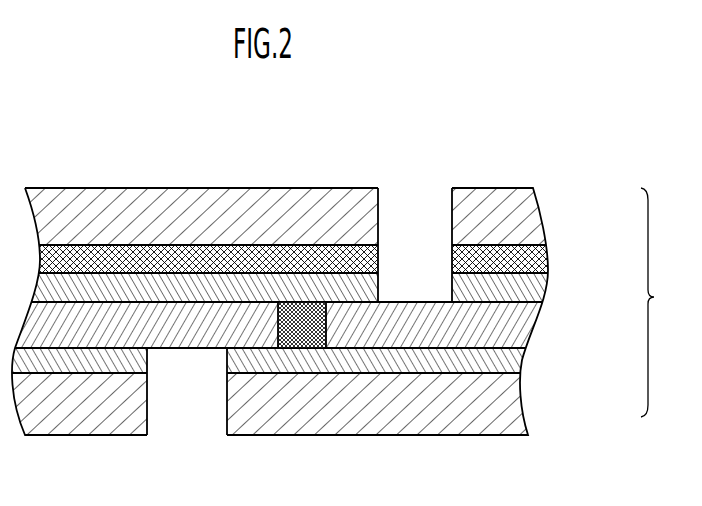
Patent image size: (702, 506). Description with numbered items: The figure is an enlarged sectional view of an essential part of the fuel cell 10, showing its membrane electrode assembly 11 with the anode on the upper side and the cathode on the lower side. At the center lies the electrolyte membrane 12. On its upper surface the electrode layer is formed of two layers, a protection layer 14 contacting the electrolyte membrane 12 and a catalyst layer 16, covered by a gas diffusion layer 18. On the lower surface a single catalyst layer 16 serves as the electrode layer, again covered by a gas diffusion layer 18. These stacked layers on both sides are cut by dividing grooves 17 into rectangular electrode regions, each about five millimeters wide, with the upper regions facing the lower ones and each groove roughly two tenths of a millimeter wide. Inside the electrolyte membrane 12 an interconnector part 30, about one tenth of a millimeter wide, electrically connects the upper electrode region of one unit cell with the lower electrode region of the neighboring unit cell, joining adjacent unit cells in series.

The fuel cell 10 is at (499, 135).
The membrane electrode assembly 11 is at (658, 302).
The electrolyte membrane 12 is at (525, 332).
The protection layer 14 is at (548, 293).
The catalyst layer 16 is at (548, 260).
The dividing groove 17 is at (407, 227).
The gas diffusion layer 18 is at (545, 222).
The interconnector part 30 is at (293, 348).